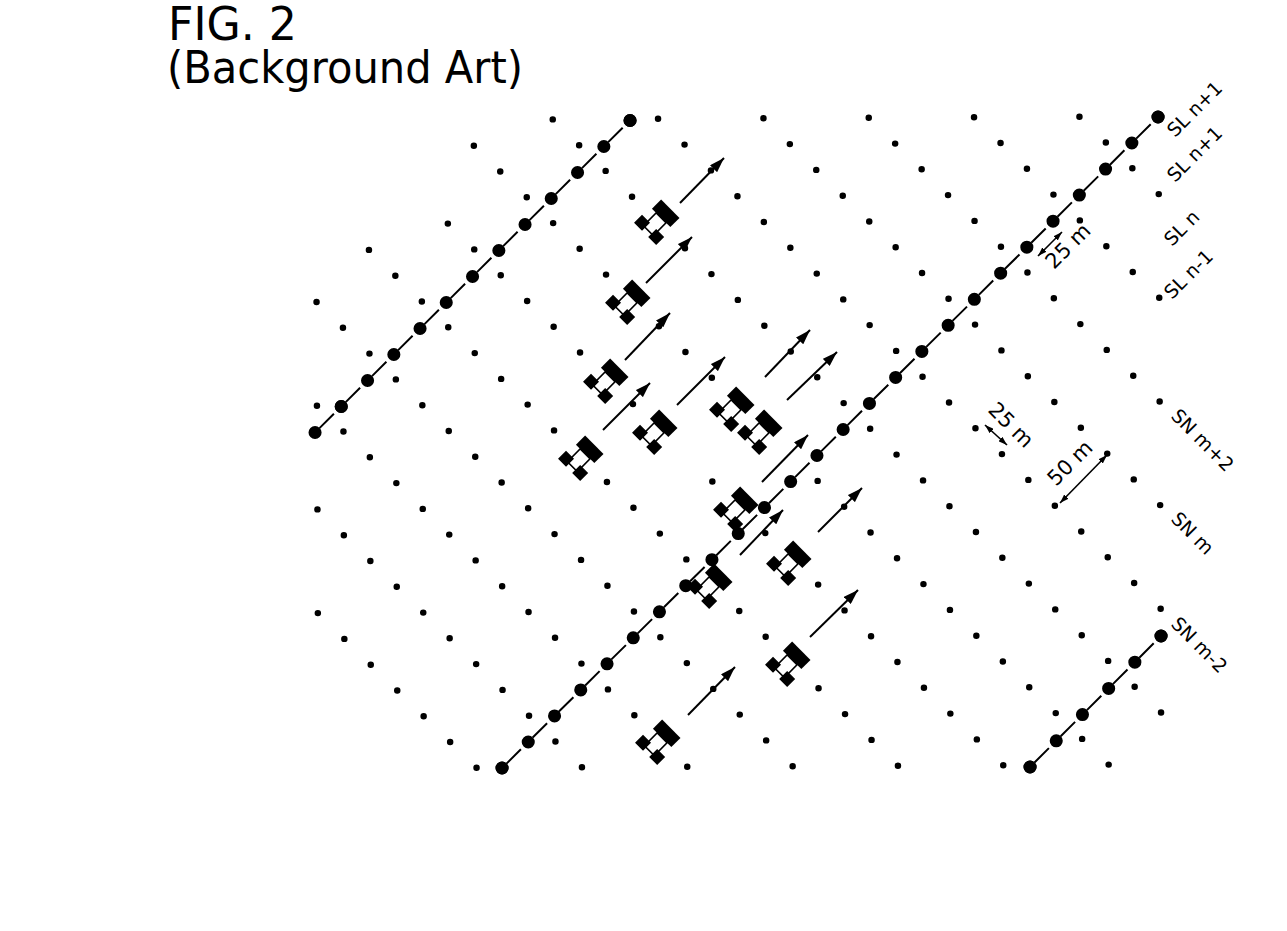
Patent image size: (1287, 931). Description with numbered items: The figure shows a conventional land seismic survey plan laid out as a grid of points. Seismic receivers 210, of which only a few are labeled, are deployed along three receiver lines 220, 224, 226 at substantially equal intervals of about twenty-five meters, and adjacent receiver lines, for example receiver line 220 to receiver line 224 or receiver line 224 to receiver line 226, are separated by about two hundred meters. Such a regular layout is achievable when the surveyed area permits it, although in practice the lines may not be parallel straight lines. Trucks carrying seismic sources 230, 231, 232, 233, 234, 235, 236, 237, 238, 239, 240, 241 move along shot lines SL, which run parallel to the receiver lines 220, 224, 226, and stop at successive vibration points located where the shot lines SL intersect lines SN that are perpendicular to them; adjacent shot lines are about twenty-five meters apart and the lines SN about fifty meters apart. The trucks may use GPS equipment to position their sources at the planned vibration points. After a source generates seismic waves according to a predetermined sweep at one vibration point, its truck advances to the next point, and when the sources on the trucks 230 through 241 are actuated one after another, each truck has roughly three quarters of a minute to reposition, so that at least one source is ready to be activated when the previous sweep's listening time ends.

The seismic receivers 210 is at (631, 115).
The receiver line 220 is at (515, 233).
The receiver line 224 is at (988, 282).
The receiver line 226 is at (1095, 702).
The truck carrying seismic source 230 is at (648, 220).
The truck carrying seismic source 231 is at (615, 318).
The truck carrying seismic source 232 is at (598, 385).
The truck carrying seismic source 233 is at (574, 468).
The truck carrying seismic source 234 is at (650, 442).
The truck carrying seismic source 235 is at (718, 418).
The truck carrying seismic source 236 is at (752, 437).
The truck carrying seismic source 237 is at (722, 514).
The truck carrying seismic source 238 is at (702, 595).
The truck carrying seismic source 239 is at (782, 580).
The truck carrying seismic source 240 is at (665, 748).
The truck carrying seismic source 241 is at (794, 664).